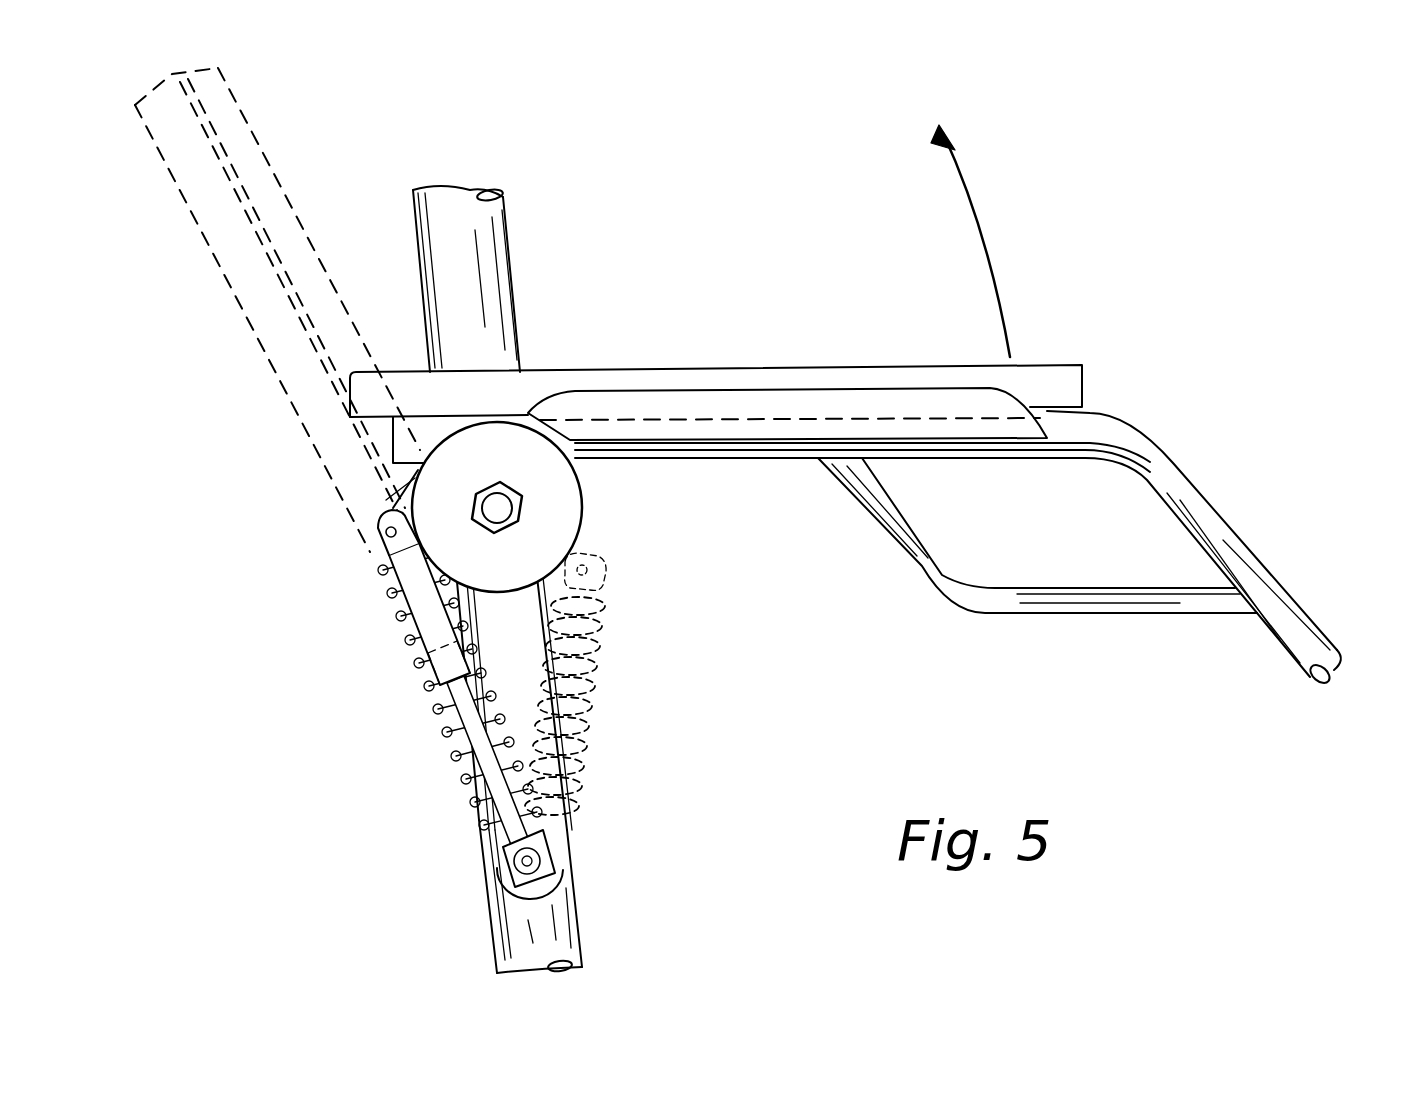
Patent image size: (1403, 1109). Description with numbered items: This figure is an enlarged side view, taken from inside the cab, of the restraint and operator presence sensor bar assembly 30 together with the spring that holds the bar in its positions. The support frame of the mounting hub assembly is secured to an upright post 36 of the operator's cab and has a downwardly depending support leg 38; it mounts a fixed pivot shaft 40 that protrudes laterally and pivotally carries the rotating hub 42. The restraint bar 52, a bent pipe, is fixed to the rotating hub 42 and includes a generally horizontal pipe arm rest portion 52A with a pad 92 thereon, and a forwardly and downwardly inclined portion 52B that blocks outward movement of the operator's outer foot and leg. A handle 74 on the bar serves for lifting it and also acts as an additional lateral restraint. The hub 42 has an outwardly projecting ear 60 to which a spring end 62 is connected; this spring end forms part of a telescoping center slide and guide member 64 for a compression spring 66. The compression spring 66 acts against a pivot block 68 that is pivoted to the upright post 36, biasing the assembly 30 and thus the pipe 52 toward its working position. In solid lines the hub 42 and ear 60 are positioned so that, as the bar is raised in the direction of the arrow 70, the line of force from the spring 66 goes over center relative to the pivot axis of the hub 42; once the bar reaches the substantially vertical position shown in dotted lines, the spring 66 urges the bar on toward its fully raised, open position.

The restraint and operator presence sensor bar assembly 30 is at (1097, 406).
The upright post 36 is at (467, 285).
The support leg 38 is at (515, 677).
The fixed pivot shaft 40 is at (500, 506).
The rotating hub 42 is at (565, 522).
The restraint bar 52 is at (250, 323).
The horizontal pipe arm rest portion 52A is at (750, 422).
The forwardly and downwardly inclined portion 52B is at (1250, 553).
The ear 60 is at (390, 497).
The spring end 62 is at (388, 549).
The telescoping center slide and guide member 64 is at (470, 727).
The compression spring 66 is at (412, 637).
The pivot block 68 is at (512, 863).
The arrow 70 is at (988, 228).
The handle 74 is at (1017, 592).
The pad 92 is at (922, 387).